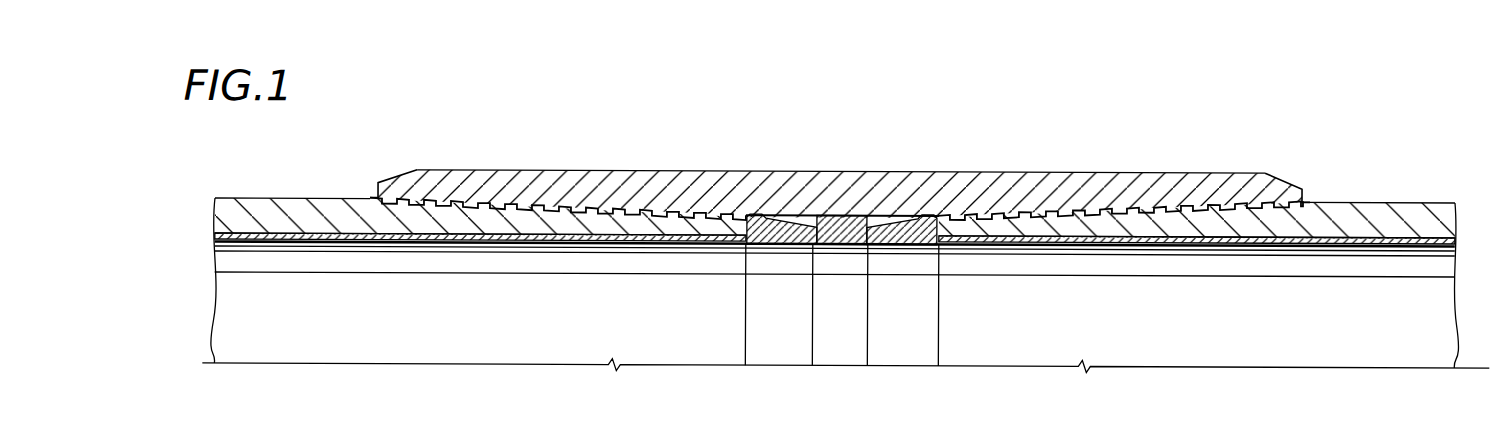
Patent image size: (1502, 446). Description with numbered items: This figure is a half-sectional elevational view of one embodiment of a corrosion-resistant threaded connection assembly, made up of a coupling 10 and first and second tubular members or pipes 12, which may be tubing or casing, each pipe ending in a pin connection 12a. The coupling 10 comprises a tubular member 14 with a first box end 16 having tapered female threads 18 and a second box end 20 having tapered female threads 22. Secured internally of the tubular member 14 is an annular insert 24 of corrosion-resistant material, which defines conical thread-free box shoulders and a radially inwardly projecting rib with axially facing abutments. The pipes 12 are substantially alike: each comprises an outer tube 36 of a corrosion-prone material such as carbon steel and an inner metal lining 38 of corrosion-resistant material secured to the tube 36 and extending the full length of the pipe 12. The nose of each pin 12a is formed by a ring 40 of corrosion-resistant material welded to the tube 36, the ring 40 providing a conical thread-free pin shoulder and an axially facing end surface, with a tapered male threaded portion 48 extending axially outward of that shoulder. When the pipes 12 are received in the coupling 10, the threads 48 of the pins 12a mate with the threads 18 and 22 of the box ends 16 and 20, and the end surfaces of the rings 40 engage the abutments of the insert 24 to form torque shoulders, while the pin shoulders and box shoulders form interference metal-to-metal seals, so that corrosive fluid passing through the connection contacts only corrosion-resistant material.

The coupling 10 is at (870, 163).
The tubular member or pipe 12 is at (196, 202).
The pin connection 12a is at (344, 214).
The tubular member 14 is at (634, 185).
The first box end 16 is at (367, 196).
The tapered female threads 18 is at (453, 198).
The second box end 20 is at (1307, 203).
The tapered female threads 22 is at (1203, 207).
The annular insert 24 is at (843, 253).
The outer tube 36 is at (400, 222).
The inner lining 38 is at (317, 243).
The ring 40 is at (775, 238).
The tapered male threaded portion 48 is at (497, 206).